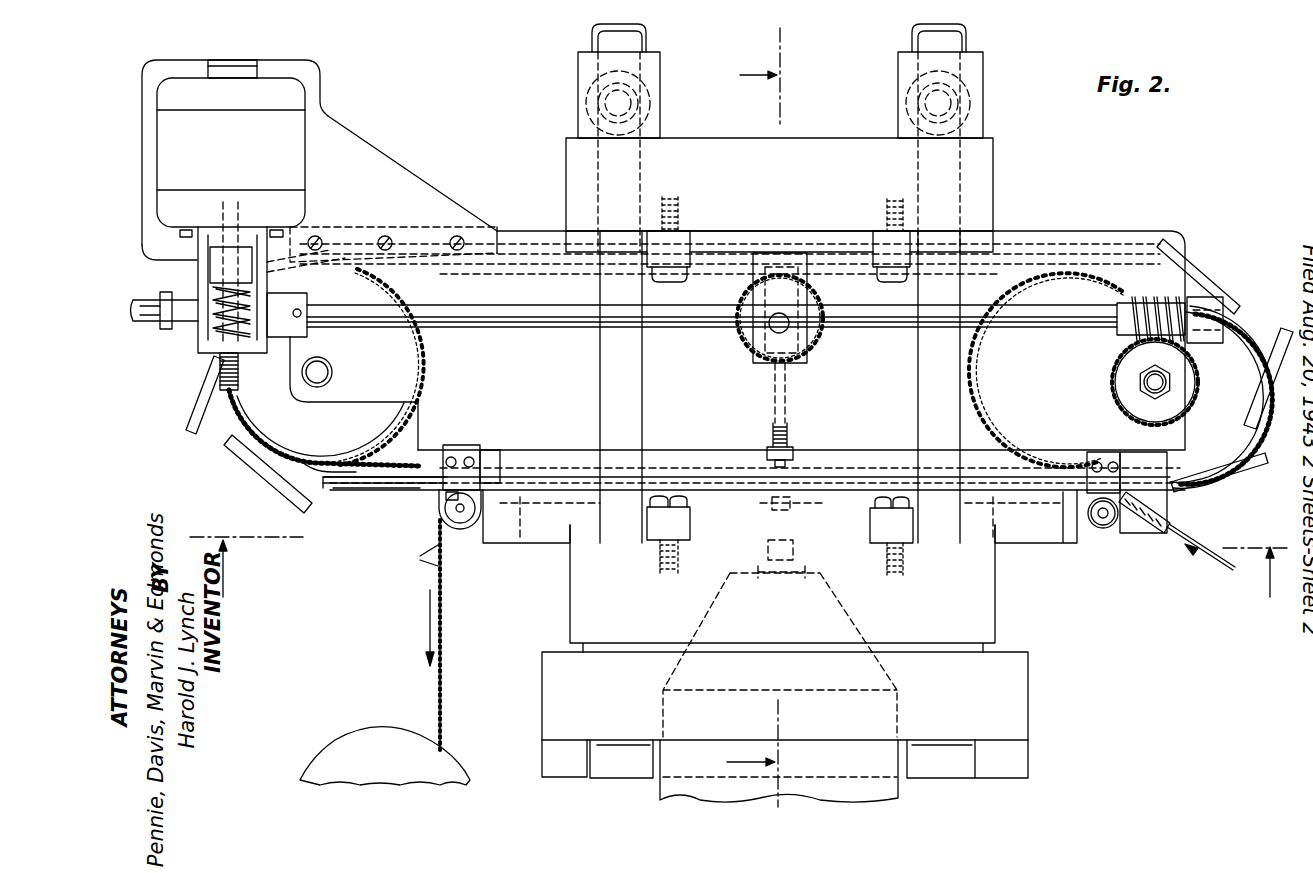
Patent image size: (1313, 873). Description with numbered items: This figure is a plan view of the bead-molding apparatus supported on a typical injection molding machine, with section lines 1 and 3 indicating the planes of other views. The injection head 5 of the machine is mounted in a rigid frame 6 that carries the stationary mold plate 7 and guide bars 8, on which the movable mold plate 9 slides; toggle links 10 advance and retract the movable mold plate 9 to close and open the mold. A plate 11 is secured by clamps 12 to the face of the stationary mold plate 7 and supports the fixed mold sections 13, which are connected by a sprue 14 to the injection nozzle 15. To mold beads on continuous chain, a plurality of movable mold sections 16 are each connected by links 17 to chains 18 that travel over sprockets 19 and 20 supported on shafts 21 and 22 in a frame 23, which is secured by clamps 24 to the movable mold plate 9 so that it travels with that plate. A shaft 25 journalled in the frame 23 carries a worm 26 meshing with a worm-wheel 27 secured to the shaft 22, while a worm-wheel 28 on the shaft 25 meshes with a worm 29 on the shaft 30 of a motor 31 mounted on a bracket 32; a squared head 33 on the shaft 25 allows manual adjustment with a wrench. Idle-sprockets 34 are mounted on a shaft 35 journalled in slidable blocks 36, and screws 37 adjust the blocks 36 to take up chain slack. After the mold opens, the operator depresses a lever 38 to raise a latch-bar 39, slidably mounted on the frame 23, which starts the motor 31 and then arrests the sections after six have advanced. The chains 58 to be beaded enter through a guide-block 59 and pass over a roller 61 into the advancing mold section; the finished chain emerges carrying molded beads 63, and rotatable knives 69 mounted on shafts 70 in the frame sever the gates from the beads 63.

The section line 1- 1 is at (753, 417).
The section line 3- 3 is at (740, 567).
The injection head 5 is at (853, 617).
The rigid frame 6 is at (1028, 695).
The stationary mold plate 7 is at (995, 597).
The guide bars 8 is at (975, 383).
The movable mold plate 9 is at (993, 186).
The toggle links 10 is at (988, 31).
The plate 11 is at (543, 533).
The clamps 12 is at (865, 552).
The fixed mold sections 13 is at (520, 503).
The sprue 14 is at (783, 515).
The injection nozzle 15 is at (752, 565).
The movable mold sections 16 is at (1217, 478).
The links 17 is at (1190, 485).
The chains 18 is at (323, 472).
The sprocket 19 is at (365, 423).
The sprocket 20 is at (1075, 393).
The shaft 21 is at (333, 370).
The shaft 22 is at (1148, 388).
The frame 23 is at (508, 228).
The clamps 24 is at (862, 243).
The shaft 25 is at (515, 326).
The worm 26 is at (1175, 302).
The worm-wheel 27 is at (1186, 384).
The worm-wheel 28 is at (246, 379).
The worm 29 is at (212, 300).
The motor shaft 30 is at (220, 248).
The motor 31 is at (303, 160).
The bracket 32 is at (408, 183).
The squared head 33 is at (153, 323).
The idle-sprockets 34 is at (745, 345).
The shaft 35 is at (770, 340).
The slidable blocks 36 is at (807, 360).
The screws 37 is at (785, 405).
The lever 38 is at (400, 472).
The latch-bar 39 is at (517, 462).
The chains 58 is at (1202, 543).
The guide-block 59 is at (1153, 528).
The roller 61 is at (1103, 529).
The beads 63 is at (415, 555).
The rotatable knives 69 is at (437, 514).
The shafts 70 is at (460, 524).